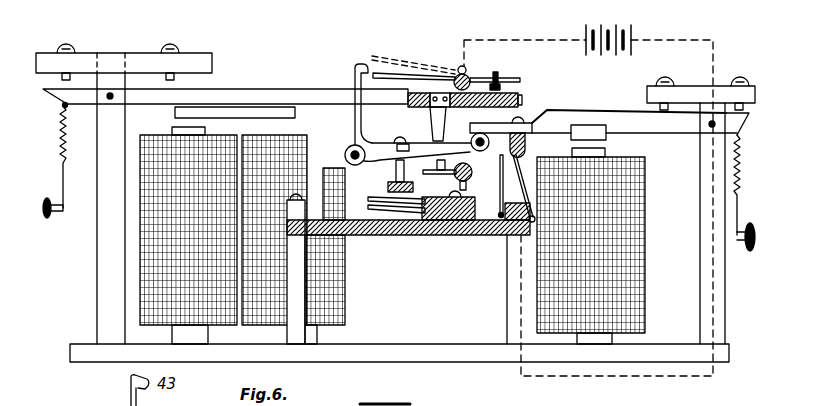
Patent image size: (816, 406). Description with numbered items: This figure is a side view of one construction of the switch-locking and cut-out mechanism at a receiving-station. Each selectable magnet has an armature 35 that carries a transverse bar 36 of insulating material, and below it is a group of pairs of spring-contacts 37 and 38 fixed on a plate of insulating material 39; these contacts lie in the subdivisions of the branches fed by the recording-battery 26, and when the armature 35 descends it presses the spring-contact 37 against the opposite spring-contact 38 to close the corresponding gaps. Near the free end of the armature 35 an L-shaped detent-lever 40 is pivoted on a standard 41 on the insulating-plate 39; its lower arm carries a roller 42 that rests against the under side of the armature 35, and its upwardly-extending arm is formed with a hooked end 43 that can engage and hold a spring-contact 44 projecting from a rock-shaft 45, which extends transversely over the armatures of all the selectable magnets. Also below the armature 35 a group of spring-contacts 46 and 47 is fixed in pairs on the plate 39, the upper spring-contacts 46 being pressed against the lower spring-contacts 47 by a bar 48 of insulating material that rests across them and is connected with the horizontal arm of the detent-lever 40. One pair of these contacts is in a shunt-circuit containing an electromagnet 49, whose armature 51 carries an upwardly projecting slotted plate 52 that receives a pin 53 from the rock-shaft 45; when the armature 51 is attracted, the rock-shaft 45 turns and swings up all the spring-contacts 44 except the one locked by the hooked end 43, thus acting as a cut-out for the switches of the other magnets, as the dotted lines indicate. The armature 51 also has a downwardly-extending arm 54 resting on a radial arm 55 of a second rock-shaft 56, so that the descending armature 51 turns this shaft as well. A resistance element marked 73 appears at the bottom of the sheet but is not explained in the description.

The recording-battery 26 is at (588, 191).
The armature 35 is at (603, 114).
The transverse bar 36 is at (530, 145).
The spring-contact 37 is at (522, 188).
The spring-contact 38 is at (494, 186).
The plate of insulating material 39 is at (408, 228).
The L-shaped detent-lever 40 is at (417, 142).
The standard 41 is at (339, 155).
The roller 42 is at (483, 150).
The hooked end 43 is at (352, 97).
The spring-contact 44 is at (447, 90).
The rock-shaft 45 is at (465, 72).
The spring-contact 46 is at (441, 192).
The spring-contact 47 is at (389, 208).
The bar of insulating material 48 is at (388, 186).
The electromagnet 49 is at (399, 345).
The armature 51 is at (225, 87).
The slotted plate 52 is at (507, 72).
The pin 53 is at (521, 80).
The downwardly-extending arm 54 is at (425, 124).
The radial arm 55 is at (432, 165).
The rock-shaft 56 is at (455, 176).
The resistance 73 is at (397, 399).